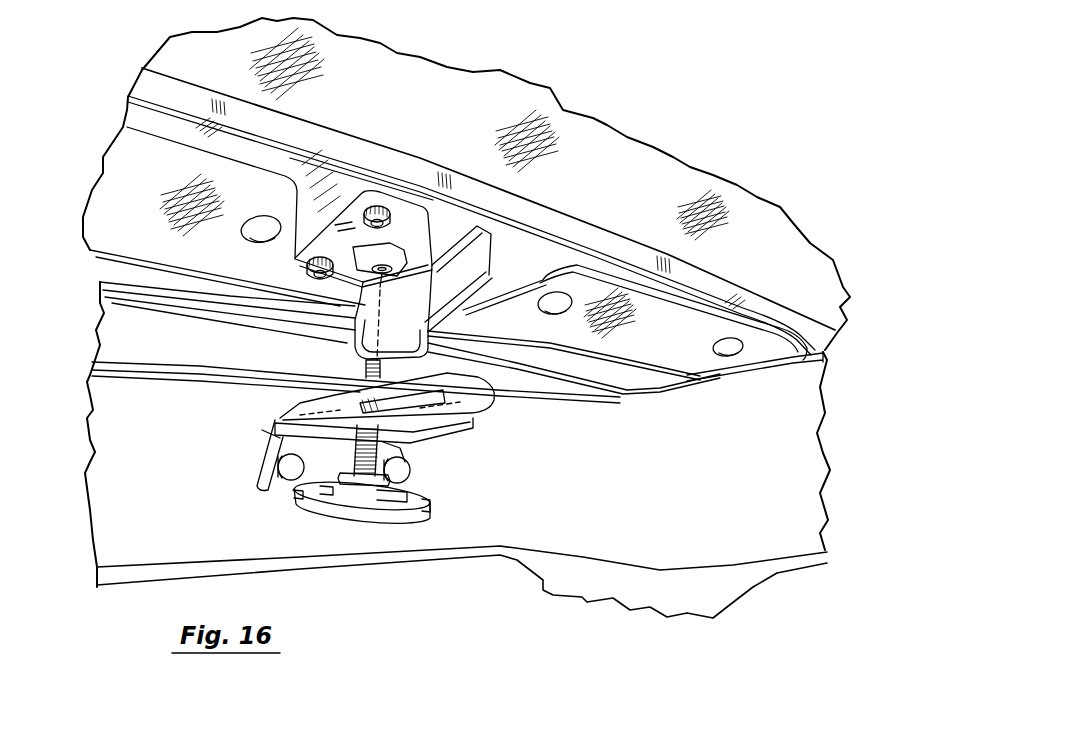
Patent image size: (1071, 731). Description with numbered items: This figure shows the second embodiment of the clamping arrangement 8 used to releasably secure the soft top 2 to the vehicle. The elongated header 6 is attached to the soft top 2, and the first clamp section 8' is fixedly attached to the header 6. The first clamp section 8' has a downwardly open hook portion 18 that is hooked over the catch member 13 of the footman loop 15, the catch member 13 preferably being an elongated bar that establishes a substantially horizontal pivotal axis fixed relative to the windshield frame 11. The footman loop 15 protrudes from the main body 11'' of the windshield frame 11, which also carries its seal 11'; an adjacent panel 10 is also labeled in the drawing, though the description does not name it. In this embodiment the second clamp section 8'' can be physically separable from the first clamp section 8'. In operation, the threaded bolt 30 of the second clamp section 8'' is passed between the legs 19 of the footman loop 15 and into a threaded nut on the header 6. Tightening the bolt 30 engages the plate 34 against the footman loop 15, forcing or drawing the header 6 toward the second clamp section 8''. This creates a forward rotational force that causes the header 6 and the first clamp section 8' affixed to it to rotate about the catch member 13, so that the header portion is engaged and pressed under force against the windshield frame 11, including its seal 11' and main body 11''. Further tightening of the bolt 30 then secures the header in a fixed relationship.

The soft top 2 is at (690, 163).
The header 6 is at (363, 152).
The roof panel 10 is at (617, 133).
The first clamp section 8' is at (424, 265).
The hook portion 18 is at (350, 320).
The seal 11' is at (390, 338).
The main body of the windshield frame 11'' is at (343, 388).
The windshield frame 11 is at (451, 457).
The clamping arrangement 8 is at (556, 461).
The catch member 13 is at (430, 387).
The plate 34 is at (472, 422).
The threaded bolt 30 is at (356, 457).
The legs 19 is at (357, 393).
The second clamp section 8'' is at (346, 511).
The footman loop 15 is at (250, 447).